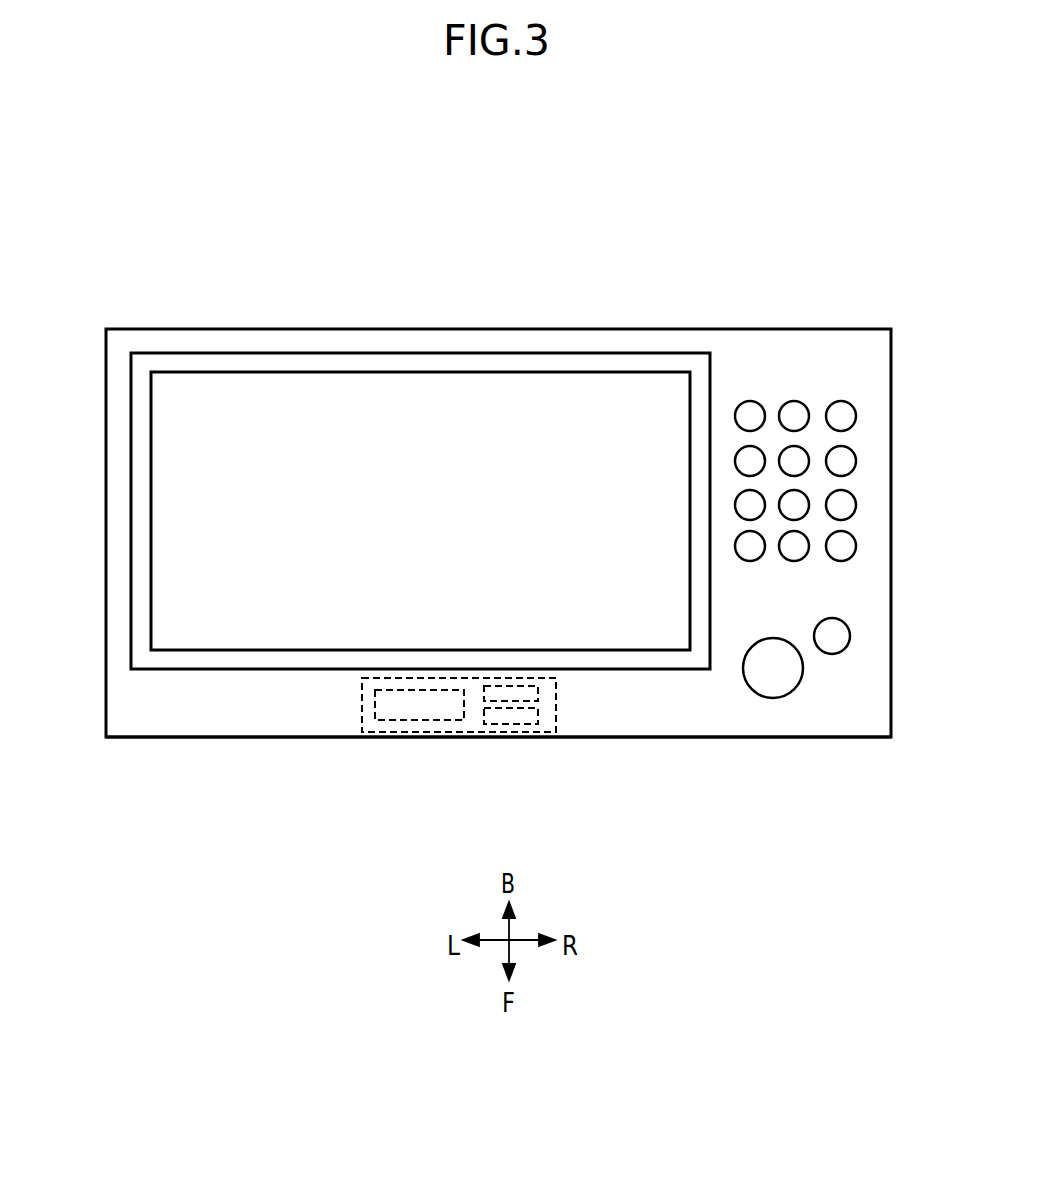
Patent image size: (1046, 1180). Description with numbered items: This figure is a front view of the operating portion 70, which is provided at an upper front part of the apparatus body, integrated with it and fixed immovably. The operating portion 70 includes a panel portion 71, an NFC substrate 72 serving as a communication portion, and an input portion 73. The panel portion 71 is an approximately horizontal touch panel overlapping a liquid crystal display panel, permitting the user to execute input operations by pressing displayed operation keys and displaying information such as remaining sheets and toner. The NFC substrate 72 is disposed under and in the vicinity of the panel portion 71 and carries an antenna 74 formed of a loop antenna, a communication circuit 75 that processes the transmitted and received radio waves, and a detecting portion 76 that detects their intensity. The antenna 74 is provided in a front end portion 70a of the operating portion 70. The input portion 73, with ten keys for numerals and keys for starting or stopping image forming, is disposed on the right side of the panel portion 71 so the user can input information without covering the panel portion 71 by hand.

The operating portion 70 is at (717, 252).
The front end portion 70a is at (683, 738).
The panel portion 71 is at (436, 353).
The NFC substrate 72 is at (362, 712).
The input portion 73 is at (839, 362).
The antenna 74 is at (418, 720).
The communication circuit 75 is at (513, 724).
The detecting portion 76 is at (538, 694).